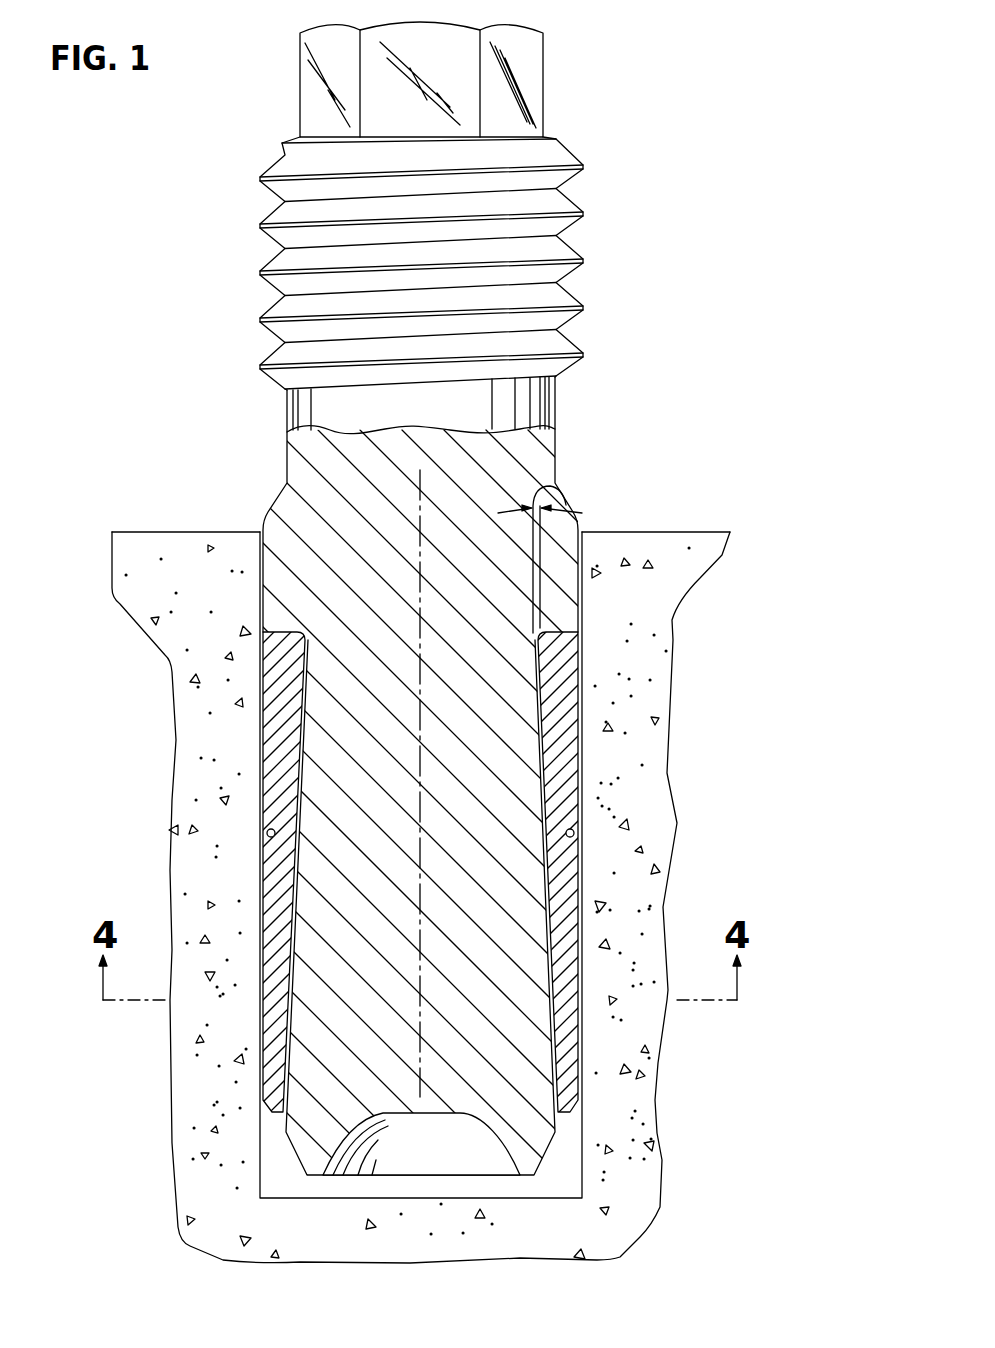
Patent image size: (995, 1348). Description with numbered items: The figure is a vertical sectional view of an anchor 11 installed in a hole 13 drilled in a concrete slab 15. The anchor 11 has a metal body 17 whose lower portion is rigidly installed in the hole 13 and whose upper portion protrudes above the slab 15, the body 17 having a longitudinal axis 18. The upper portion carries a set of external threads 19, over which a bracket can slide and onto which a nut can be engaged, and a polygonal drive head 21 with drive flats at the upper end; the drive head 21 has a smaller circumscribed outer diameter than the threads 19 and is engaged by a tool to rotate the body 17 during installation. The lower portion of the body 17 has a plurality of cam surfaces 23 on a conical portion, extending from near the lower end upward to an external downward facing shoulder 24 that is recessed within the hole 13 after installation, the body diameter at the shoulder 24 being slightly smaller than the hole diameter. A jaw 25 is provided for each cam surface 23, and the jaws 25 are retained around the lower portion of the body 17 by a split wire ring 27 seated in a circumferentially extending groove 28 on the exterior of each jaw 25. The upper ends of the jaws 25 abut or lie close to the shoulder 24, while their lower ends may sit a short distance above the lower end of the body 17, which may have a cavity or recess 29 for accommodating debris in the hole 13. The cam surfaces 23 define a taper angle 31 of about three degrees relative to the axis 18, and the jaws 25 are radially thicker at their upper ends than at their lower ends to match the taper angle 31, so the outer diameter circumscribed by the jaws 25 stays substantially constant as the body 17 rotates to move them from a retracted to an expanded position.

The anchor 11 is at (189, 191).
The hole 13 is at (266, 1025).
The concrete slab 15 is at (213, 532).
The metal body 17 is at (542, 466).
The longitudinal axis 18 is at (420, 507).
The external threads 19 is at (268, 263).
The polygonal drive head 21 is at (530, 69).
The cam surfaces 23 is at (548, 903).
The downward facing shoulder 24 is at (587, 660).
The jaws 25 is at (280, 777).
The split wire ring 27 is at (578, 835).
The groove 28 is at (266, 833).
The recess 29 is at (493, 1140).
The taper angle 31 is at (553, 486).